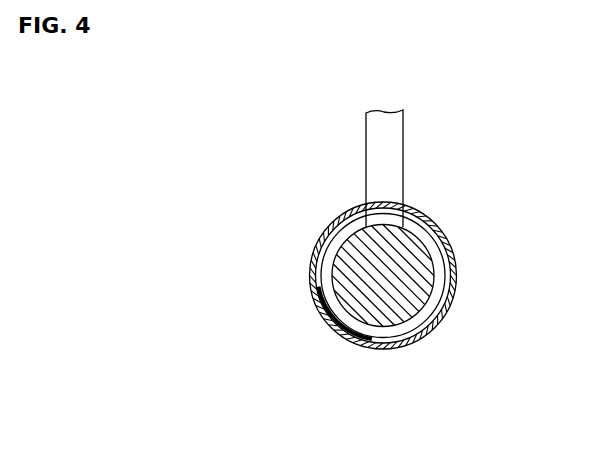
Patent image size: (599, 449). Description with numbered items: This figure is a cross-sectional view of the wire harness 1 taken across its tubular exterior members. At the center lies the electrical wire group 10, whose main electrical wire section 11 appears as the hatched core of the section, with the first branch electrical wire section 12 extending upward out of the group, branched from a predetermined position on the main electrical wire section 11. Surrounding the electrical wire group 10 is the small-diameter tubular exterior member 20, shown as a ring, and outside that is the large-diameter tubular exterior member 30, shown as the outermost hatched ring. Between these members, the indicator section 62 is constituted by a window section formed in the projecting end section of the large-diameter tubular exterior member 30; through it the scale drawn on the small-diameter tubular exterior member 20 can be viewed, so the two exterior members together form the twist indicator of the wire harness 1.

The wire harness 1 is at (383, 260).
The electrical wire group 10 is at (416, 298).
The main electrical wire section 11 is at (399, 312).
The first branch electrical wire section 12 is at (372, 158).
The small-diameter tubular exterior member 20 is at (450, 246).
The large-diameter tubular exterior member 30 is at (438, 218).
The indicator section 62 is at (311, 275).